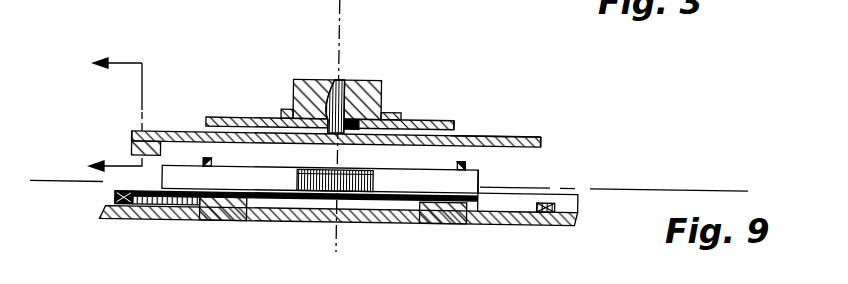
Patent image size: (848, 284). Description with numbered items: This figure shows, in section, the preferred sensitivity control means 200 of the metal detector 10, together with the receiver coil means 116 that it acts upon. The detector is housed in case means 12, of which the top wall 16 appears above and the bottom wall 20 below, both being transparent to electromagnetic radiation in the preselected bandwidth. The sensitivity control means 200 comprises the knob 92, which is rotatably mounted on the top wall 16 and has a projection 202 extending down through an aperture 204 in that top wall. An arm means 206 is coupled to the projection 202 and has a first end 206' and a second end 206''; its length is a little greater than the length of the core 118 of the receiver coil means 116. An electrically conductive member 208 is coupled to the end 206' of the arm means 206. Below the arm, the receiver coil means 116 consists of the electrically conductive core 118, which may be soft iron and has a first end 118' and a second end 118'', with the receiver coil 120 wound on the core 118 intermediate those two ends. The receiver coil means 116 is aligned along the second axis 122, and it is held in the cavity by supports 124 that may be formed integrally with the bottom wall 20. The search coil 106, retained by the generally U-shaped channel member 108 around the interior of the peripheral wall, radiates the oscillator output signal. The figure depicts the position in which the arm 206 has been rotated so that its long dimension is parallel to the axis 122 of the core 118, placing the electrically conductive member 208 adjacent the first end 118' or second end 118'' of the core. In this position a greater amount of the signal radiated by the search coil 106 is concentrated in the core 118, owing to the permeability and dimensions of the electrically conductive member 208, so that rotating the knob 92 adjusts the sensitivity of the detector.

The metal detector 10 is at (100, 112).
The case means 12 is at (222, 119).
The top wall 16 is at (450, 120).
The bottom wall 20 is at (295, 221).
The knob 92 is at (362, 80).
The search coil 106 is at (548, 205).
The U-shaped channel member 108 is at (525, 204).
The receiver coil means 116 is at (438, 255).
The core 118 is at (305, 171).
The first end of core 118' is at (121, 194).
The second end of core 118'' is at (555, 176).
The receiver coil 120 is at (355, 168).
The second axis 122 is at (682, 188).
The supports 124 is at (205, 162).
The sensitivity control means 200 is at (537, 140).
The projection 202 is at (375, 115).
The aperture 204 is at (333, 80).
The arm means 206 is at (496, 120).
The first end of arm means 206' is at (97, 112).
The second end of arm means 206'' is at (580, 126).
The electrically conductive member 208 is at (131, 150).